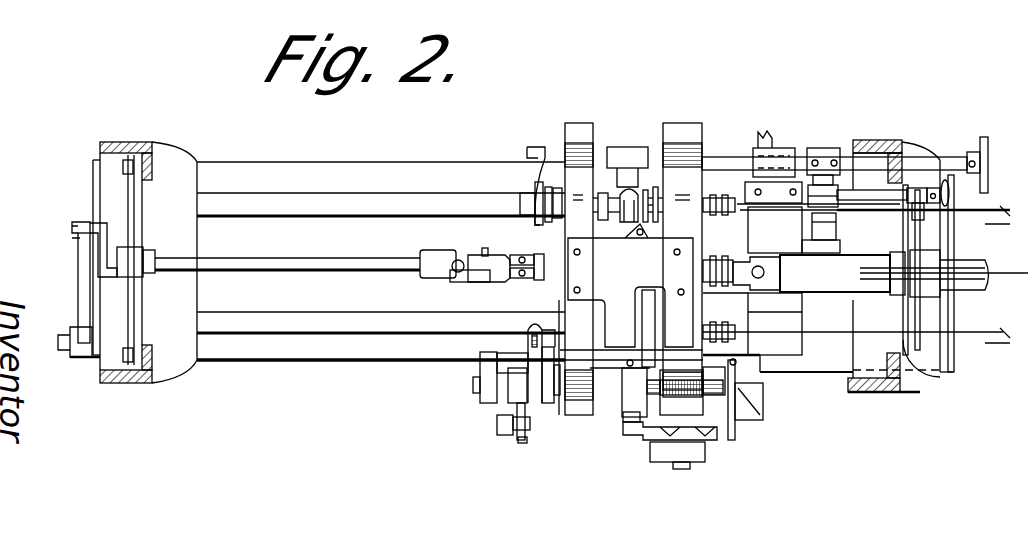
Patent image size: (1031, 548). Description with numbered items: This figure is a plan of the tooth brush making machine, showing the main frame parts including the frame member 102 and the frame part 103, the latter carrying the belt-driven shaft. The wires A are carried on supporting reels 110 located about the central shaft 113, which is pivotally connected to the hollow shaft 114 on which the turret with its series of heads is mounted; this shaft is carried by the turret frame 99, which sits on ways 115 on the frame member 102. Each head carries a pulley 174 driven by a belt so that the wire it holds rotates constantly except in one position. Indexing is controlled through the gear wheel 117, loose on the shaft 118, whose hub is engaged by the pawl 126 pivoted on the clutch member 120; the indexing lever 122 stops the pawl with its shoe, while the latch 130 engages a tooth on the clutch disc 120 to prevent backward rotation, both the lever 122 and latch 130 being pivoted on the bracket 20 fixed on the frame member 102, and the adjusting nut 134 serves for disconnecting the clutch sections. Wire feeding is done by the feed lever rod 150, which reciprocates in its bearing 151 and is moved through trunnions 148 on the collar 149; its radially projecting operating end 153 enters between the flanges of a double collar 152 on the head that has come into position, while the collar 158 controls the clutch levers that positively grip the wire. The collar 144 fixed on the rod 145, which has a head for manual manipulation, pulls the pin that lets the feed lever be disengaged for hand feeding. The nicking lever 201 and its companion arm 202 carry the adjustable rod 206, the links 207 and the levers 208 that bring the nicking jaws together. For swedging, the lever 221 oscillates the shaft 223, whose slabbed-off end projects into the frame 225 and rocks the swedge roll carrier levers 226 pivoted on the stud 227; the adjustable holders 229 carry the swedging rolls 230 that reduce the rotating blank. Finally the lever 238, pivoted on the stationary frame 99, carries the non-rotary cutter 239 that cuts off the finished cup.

The bracket 20 is at (662, 462).
The turret frame 99 is at (580, 302).
The frame member 102 is at (344, 355).
The frame part 103 is at (118, 131).
The supporting reel 110 is at (918, 380).
The central shaft 113 is at (815, 292).
The hollow shaft 114 is at (745, 291).
The ways 115 is at (320, 212).
The gear wheel 117 is at (714, 381).
The shaft 118 is at (688, 469).
The clutch member 120 is at (672, 392).
The indexing lever 122 is at (735, 438).
The pawl 126 is at (740, 410).
The latch 130 is at (632, 433).
The adjusting nut 134 is at (693, 433).
The collar 144 is at (825, 148).
The rod 145 is at (738, 153).
The trunnions 148 is at (825, 230).
The collar 149 is at (838, 205).
The feed lever rod 150 is at (893, 190).
The bearing 151 is at (778, 206).
The double collar 152 is at (718, 258).
The operating end 153 is at (753, 173).
The collar 158 is at (632, 228).
The pulley 174 is at (655, 229).
The lever 201 is at (508, 407).
The arm 202 is at (548, 388).
The adjustable rod 206 is at (525, 441).
The links 207 is at (552, 405).
The lever 208 is at (530, 345).
The lever 221 is at (78, 283).
The shaft 223 is at (180, 252).
The frame 225 is at (445, 246).
The swedge roll carrier lever 226 is at (480, 268).
The stud 227 is at (485, 243).
The adjustable holder 229 is at (530, 250).
The swedging roll 230 is at (530, 280).
The lever 238 is at (540, 166).
The cutter 239 is at (535, 194).
The wire A is at (990, 275).